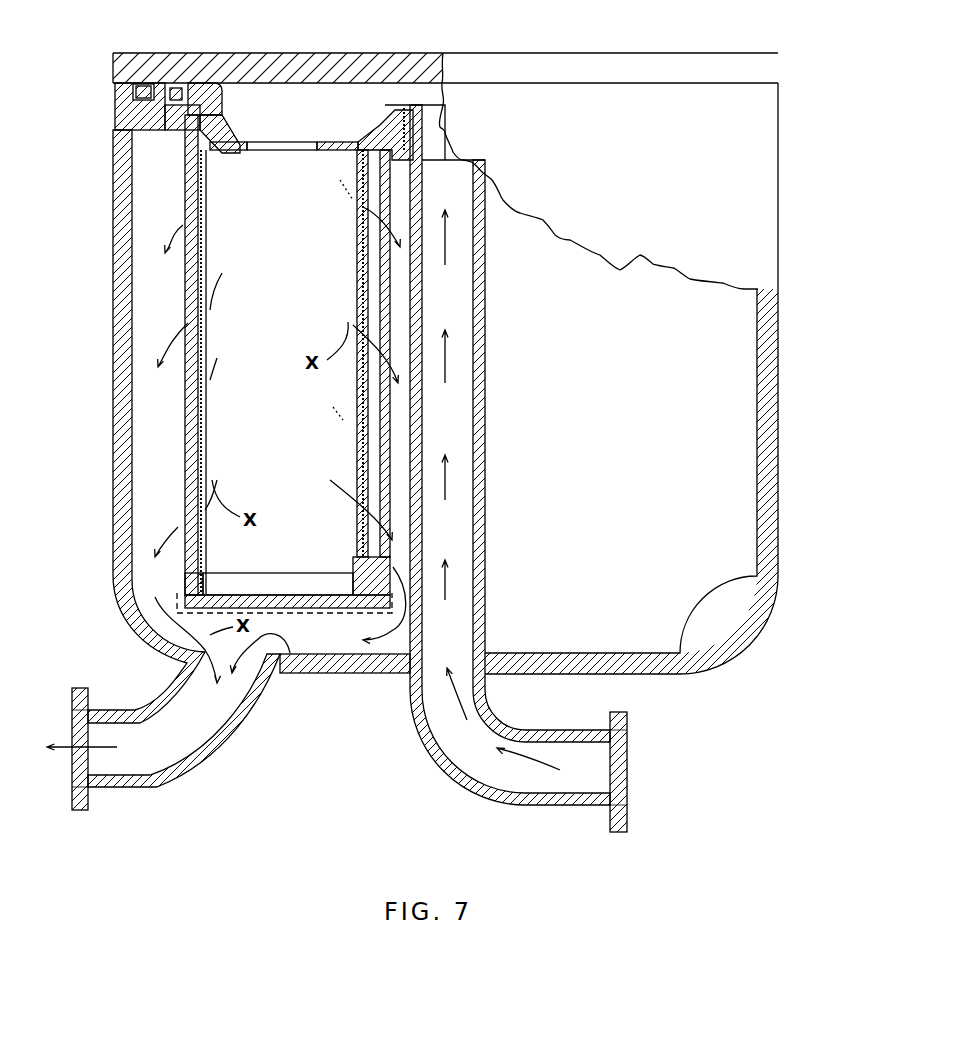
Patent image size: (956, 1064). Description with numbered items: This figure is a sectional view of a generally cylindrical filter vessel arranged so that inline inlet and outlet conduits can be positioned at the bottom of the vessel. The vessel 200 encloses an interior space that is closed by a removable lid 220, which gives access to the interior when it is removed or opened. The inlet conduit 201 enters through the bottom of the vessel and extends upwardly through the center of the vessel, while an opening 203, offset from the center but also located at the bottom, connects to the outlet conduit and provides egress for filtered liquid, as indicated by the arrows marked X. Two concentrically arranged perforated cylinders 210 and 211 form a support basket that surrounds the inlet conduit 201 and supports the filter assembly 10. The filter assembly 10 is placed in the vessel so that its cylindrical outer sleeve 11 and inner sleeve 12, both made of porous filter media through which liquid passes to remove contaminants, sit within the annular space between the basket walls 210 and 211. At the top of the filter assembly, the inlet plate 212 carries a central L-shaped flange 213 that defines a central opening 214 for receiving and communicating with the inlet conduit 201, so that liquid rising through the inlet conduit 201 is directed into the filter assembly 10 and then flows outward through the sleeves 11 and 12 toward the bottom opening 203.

The filter assembly 10 is at (258, 112).
The outer sleeve 11 is at (208, 255).
The inner sleeve 12 is at (357, 295).
The vessel 200 is at (658, 676).
The inlet conduit 201 is at (465, 770).
The opening 203 is at (288, 673).
The perforated cylinder 210 is at (383, 403).
The perforated cylinder 211 is at (185, 448).
The inlet plate 212 is at (235, 128).
The L-shaped flange 213 is at (390, 113).
The central opening 214 is at (300, 158).
The removable lid 220 is at (328, 53).